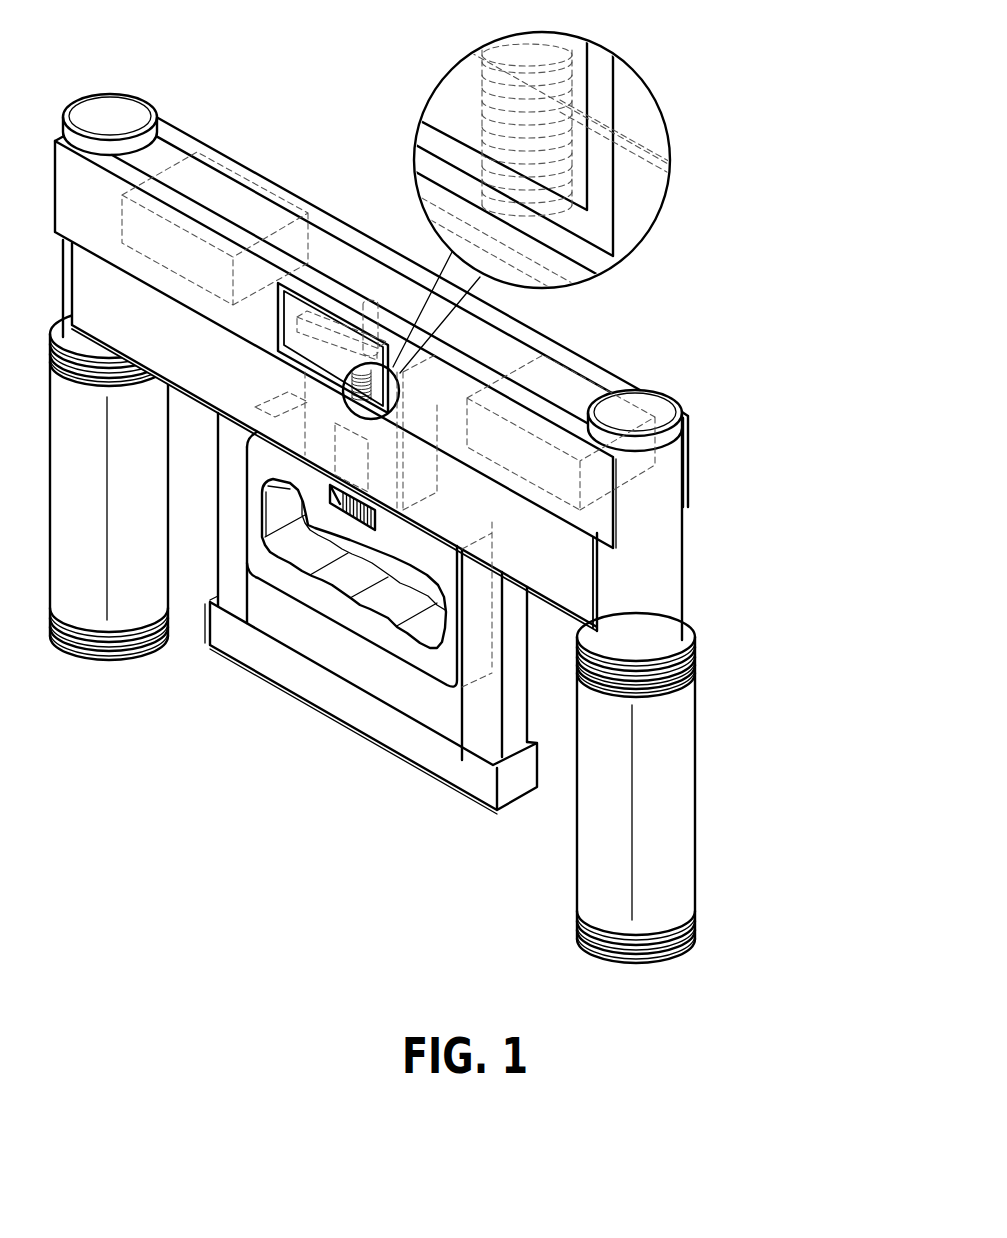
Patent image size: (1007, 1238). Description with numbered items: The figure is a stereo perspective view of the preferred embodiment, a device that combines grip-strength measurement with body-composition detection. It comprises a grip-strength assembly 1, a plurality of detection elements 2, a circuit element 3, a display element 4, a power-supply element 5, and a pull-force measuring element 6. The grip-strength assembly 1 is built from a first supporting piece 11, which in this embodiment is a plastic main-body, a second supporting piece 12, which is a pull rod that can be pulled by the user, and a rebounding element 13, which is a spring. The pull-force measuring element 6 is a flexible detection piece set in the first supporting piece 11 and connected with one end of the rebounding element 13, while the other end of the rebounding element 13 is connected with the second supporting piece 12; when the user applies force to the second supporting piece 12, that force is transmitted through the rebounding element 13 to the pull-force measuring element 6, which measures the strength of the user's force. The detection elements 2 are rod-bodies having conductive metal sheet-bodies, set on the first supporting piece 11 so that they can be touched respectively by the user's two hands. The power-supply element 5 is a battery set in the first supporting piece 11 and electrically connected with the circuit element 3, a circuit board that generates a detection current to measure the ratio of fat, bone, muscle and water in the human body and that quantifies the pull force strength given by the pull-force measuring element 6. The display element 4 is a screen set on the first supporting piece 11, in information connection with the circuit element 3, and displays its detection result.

The grip-strength assembly 1 is at (453, 289).
The detection elements 2 is at (698, 776).
The circuit element 3 is at (597, 497).
The display element 4 is at (305, 293).
The power-supply element 5 is at (253, 183).
The pull-force measuring element 6 is at (277, 365).
The first supporting piece 11 is at (530, 403).
The second supporting piece 12 is at (395, 549).
The rebounding element 13 is at (564, 224).